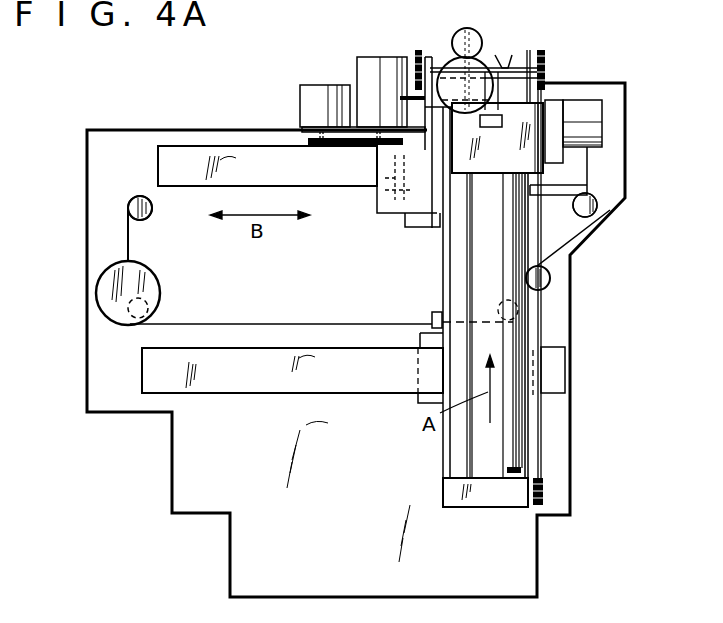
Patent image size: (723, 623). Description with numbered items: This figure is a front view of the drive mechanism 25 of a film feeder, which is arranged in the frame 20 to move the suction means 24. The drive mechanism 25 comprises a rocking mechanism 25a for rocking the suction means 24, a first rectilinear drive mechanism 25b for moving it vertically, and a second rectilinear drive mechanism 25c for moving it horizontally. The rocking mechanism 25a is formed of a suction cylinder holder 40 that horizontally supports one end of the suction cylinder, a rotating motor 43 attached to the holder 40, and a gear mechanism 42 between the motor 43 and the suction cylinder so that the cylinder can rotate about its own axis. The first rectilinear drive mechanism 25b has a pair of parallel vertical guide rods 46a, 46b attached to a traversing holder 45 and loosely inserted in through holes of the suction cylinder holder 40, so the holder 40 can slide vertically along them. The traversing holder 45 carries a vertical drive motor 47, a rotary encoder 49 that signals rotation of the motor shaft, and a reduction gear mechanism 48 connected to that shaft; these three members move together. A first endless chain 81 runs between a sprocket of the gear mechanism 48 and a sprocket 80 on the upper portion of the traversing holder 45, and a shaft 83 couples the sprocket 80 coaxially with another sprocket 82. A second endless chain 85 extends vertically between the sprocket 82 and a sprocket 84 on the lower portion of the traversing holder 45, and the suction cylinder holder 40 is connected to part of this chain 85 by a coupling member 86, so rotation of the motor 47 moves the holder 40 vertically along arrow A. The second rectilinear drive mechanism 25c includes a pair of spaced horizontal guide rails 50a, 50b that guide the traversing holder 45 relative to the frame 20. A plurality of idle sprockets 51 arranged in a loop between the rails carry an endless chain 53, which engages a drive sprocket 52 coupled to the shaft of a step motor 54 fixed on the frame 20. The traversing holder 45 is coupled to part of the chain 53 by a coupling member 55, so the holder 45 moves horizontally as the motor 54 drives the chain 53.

The frame 20 is at (330, 597).
The suction means 24 is at (507, 50).
The drive mechanism 25 is at (211, 124).
The rocking mechanism 25a is at (578, 113).
The first rectilinear drive mechanism 25b is at (347, 76).
The second rectilinear drive mechanism 25c is at (167, 293).
The suction cylinder holder 40 is at (527, 109).
The gear mechanism 42 is at (555, 155).
The rotating motor 43 is at (597, 128).
The traversing holder 45 is at (474, 498).
The guide rod 46a is at (465, 462).
The guide rod 46b is at (510, 474).
The vertical drive motor 47 is at (397, 58).
The reduction gear mechanism 48 is at (383, 215).
The rotary encoder 49 is at (312, 97).
The guide rail 50a is at (167, 162).
The guide rail 50b is at (233, 392).
The idle sprocket 51 is at (128, 205).
The drive sprocket 52 is at (135, 318).
The endless chain 53 is at (153, 196).
The step motor 54 is at (96, 290).
The coupling member 55 is at (440, 313).
The sprocket 80 is at (418, 50).
The first endless chain 81 is at (420, 102).
The sprocket 82 is at (545, 63).
The shaft 83 is at (527, 52).
The sprocket 84 is at (543, 485).
The second endless chain 85 is at (540, 312).
The coupling member 86 is at (557, 198).